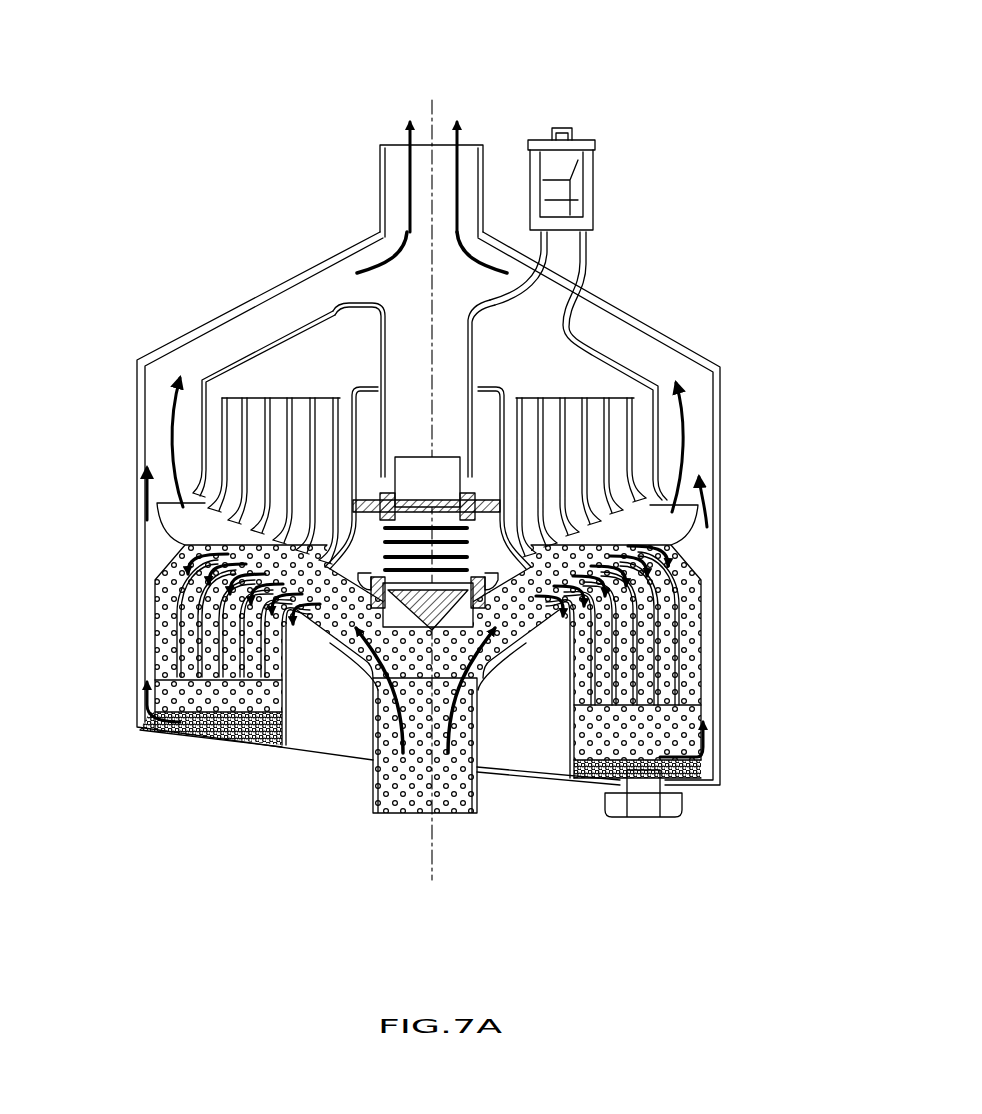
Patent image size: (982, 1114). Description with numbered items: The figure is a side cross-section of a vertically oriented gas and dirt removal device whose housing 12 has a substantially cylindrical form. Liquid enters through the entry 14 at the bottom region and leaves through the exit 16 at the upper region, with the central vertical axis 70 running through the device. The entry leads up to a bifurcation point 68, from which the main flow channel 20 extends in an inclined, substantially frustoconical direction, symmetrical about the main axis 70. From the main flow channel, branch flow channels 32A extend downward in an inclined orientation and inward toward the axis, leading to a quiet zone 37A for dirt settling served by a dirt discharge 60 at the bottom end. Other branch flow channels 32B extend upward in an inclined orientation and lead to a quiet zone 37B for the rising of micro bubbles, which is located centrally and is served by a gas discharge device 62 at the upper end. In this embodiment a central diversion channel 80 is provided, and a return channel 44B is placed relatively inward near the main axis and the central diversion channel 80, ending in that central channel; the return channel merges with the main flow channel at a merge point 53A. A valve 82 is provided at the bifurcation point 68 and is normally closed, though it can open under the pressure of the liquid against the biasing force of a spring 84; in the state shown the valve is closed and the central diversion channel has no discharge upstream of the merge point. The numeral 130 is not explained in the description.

The housing 12 is at (178, 335).
The inner shell 130 is at (230, 318).
The quiet zone for rising of micro bubbles 37B is at (323, 348).
The exit 16 is at (398, 145).
The central vertical axis 70 is at (432, 210).
The gas discharge device 62 is at (595, 140).
The central diversion channel 80 is at (577, 380).
The return channel 44B is at (490, 425).
The branch flow channels 32B is at (230, 410).
The merge point 53A is at (157, 503).
The spring 84 is at (387, 543).
The branch flow channels 32A is at (185, 661).
The main flow channel 20 is at (323, 616).
The quiet zone for dirt settling 37A is at (185, 735).
The valve 82 is at (398, 612).
The bifurcation point 68 is at (423, 633).
The entry 14 is at (462, 815).
The dirt discharge 60 is at (645, 817).